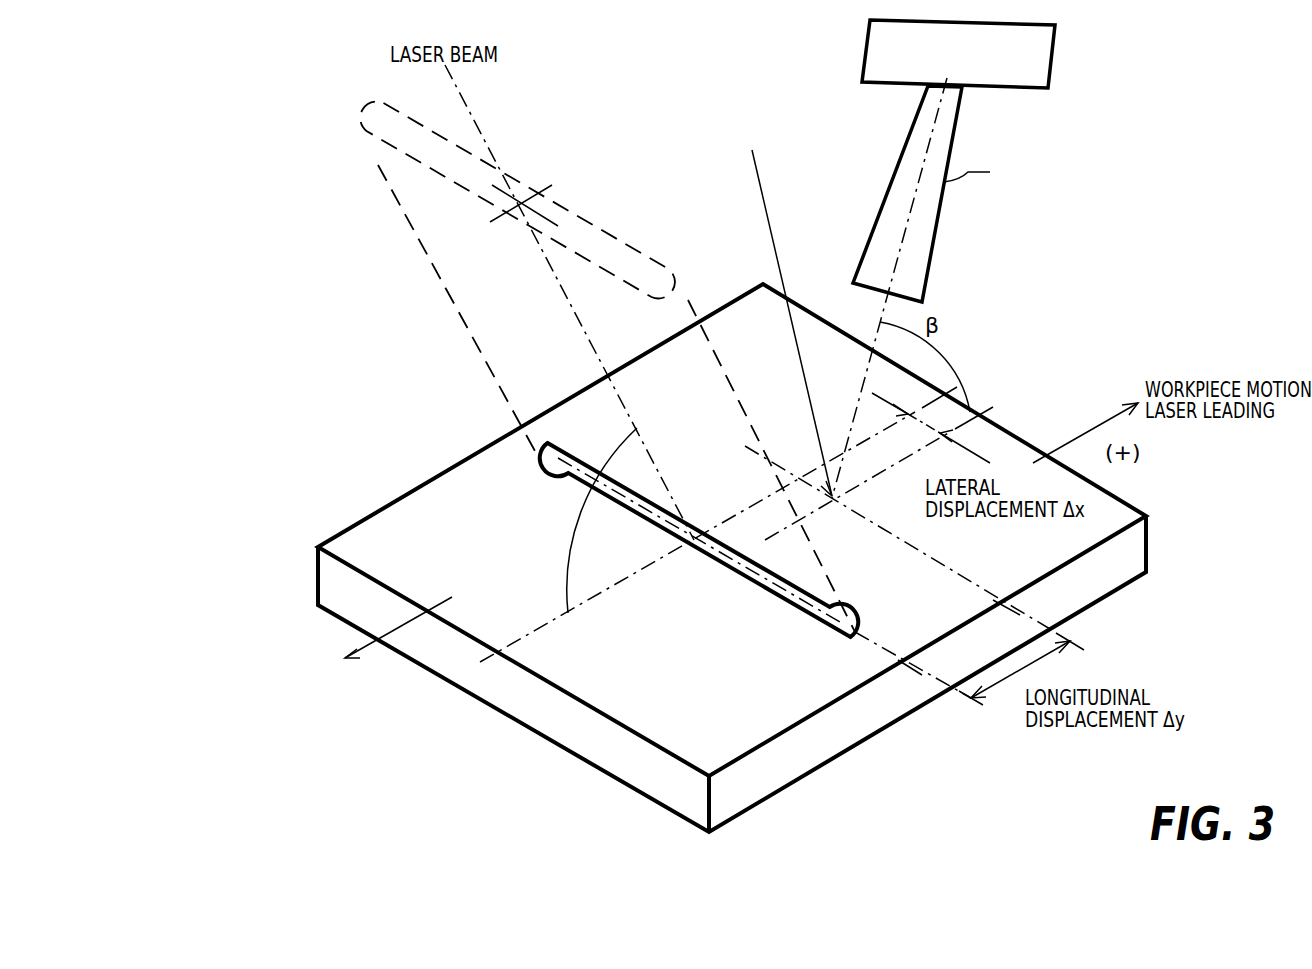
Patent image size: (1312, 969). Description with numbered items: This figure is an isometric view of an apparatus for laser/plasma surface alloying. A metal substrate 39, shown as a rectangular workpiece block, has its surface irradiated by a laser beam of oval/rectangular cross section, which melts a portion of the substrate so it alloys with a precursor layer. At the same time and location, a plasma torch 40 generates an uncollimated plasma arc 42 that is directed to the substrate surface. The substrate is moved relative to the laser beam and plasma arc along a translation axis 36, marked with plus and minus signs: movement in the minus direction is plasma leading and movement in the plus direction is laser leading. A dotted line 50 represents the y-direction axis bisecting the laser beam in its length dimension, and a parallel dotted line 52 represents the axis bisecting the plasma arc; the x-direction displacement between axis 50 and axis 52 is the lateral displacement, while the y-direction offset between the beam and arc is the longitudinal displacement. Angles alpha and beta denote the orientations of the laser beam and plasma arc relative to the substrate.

The translation axis 36 is at (380, 640).
The metal substrate 39 is at (794, 775).
The plasma torch 40 is at (1038, 81).
The plasma arc 42 is at (926, 268).
The dotted line (laser beam bisecting axis) 50 is at (555, 624).
The dotted line (plasma arc bisecting axis) 52 is at (818, 507).